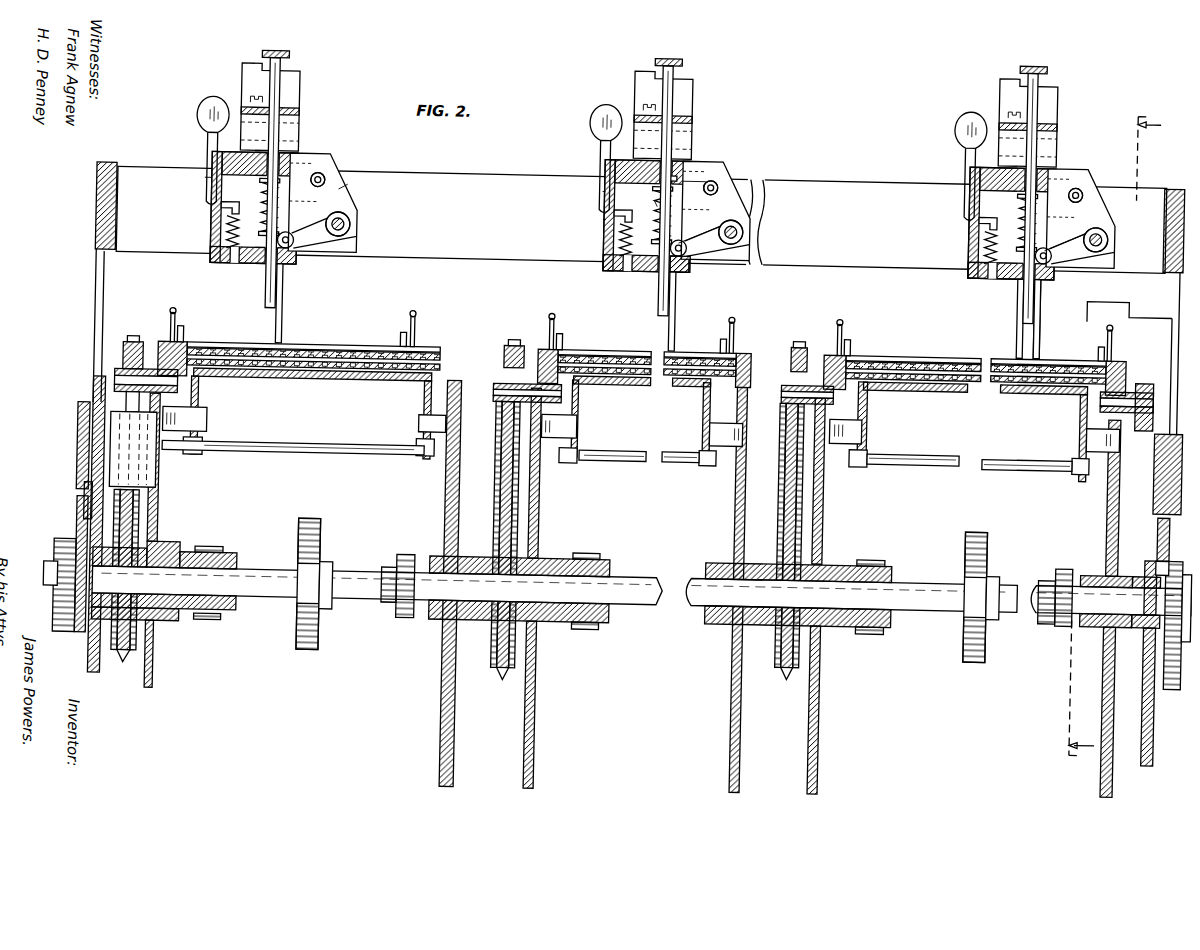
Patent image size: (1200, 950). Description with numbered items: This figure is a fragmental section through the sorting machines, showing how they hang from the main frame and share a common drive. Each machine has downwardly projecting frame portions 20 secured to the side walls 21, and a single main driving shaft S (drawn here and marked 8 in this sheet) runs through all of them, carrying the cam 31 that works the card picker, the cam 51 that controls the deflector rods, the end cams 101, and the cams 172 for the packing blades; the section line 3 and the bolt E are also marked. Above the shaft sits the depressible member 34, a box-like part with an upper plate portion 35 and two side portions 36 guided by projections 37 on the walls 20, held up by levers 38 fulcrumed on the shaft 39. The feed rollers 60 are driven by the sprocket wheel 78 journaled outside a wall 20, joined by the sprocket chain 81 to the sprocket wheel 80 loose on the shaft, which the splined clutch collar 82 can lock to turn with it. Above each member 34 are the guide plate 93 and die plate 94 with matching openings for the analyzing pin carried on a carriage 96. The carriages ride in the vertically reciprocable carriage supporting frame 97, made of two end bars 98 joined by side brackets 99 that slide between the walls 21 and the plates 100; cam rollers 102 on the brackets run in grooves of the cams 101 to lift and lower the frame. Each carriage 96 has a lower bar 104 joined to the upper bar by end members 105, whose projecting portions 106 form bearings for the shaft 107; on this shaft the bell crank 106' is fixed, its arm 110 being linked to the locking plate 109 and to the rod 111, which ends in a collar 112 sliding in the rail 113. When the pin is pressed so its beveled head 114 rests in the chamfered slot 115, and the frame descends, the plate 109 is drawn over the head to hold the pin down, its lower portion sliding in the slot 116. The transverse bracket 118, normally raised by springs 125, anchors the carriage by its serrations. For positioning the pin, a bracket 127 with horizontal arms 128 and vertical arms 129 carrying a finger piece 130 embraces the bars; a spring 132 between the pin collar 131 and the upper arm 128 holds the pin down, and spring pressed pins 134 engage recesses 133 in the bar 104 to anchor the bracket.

The section line 3 is at (1119, 432).
The main shaft 8 is at (370, 596).
The downwardly projecting frame portion 20 is at (166, 512).
The side wall 21 is at (110, 670).
The cam 31 is at (318, 646).
The depressible member 34 is at (329, 388).
The upper plate portion 35 is at (386, 376).
The side portion 36 is at (204, 400).
The projection 37 is at (206, 418).
The lever 38 is at (205, 456).
The shaft 39 is at (240, 450).
The cam 51 is at (414, 612).
The feed roller 60 is at (180, 322).
The driving sprocket wheel 78 is at (134, 340).
The sprocket wheel 80 is at (146, 648).
The sprocket chain 81 is at (150, 490).
The clutch collar 82 is at (222, 545).
The guide plate 93 is at (310, 350).
The die plate 94 is at (290, 376).
The carriage 96 is at (206, 168).
The carriage supporting frame 97 is at (853, 161).
The end bar 98 is at (964, 234).
The side bracket 99 is at (97, 288).
The plate 100 is at (83, 452).
The cam 101 is at (84, 515).
The cam roller 102 is at (91, 496).
The lower bar 104 is at (688, 262).
The end member 105 is at (656, 196).
The outwardly projecting portion 106 is at (717, 224).
The bell crank 106' is at (575, 205).
The shaft 107 is at (352, 220).
The locking plate 109 is at (612, 140).
The bell crank arm 110 is at (700, 224).
The rod 111 is at (1044, 312).
The collar 112 is at (1020, 312).
The rail 113 is at (360, 340).
The beveled head 114 is at (676, 172).
The elongated slot 115 is at (690, 170).
The elongated slot 116 is at (658, 290).
The transverse bracket 118 is at (299, 108).
The spring 125 is at (604, 210).
The bracket 127 is at (603, 182).
The horizontal arm 128 is at (305, 160).
The vertical arm 129 is at (226, 262).
The finger piece 130 is at (197, 106).
The collar 131 is at (280, 229).
The spring 132 is at (262, 205).
The recess 133 is at (235, 262).
The spring pressed pin 134 is at (212, 250).
The cam 172 is at (1164, 546).
The bolt E is at (287, 50).